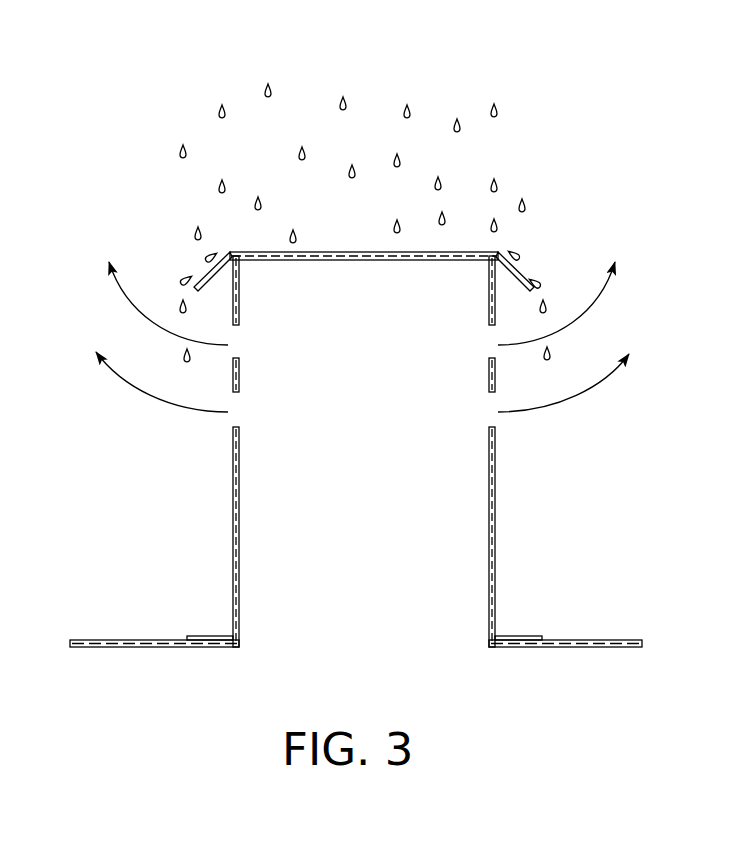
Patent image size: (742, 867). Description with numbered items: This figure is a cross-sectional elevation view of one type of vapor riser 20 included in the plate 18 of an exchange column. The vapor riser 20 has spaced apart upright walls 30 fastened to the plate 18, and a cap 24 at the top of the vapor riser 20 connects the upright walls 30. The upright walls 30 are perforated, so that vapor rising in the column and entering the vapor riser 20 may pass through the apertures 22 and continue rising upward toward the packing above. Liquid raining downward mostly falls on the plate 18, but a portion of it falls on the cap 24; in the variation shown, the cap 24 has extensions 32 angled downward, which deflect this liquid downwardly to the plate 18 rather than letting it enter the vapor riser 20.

The vapor riser 20 is at (541, 112).
The cap 24 is at (345, 262).
The extensions 32 is at (524, 276).
The upright walls 30 is at (233, 515).
The apertures 22 is at (511, 433).
The plate 18 is at (580, 647).